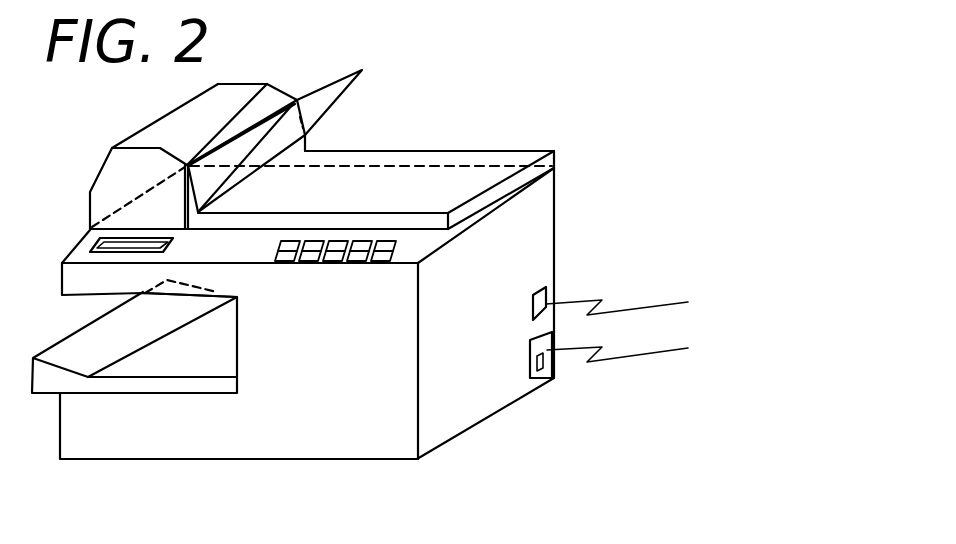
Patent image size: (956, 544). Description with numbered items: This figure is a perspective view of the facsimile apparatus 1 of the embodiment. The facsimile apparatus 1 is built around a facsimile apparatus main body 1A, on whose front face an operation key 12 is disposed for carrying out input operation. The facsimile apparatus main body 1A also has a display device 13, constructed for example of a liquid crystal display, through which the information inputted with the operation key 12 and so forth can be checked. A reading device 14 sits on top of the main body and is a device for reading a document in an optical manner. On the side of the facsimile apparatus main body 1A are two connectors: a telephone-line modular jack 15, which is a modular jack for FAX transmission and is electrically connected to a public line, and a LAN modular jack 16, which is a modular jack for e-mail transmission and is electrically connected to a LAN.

The facsimile apparatus 1 is at (610, 77).
The facsimile apparatus main body 1A is at (307, 445).
The operation key 12 is at (330, 263).
The display device 13 is at (117, 245).
The reading device 14 is at (292, 95).
The telephone-line modular jack 15 is at (548, 290).
The LAN modular jack 16 is at (540, 378).